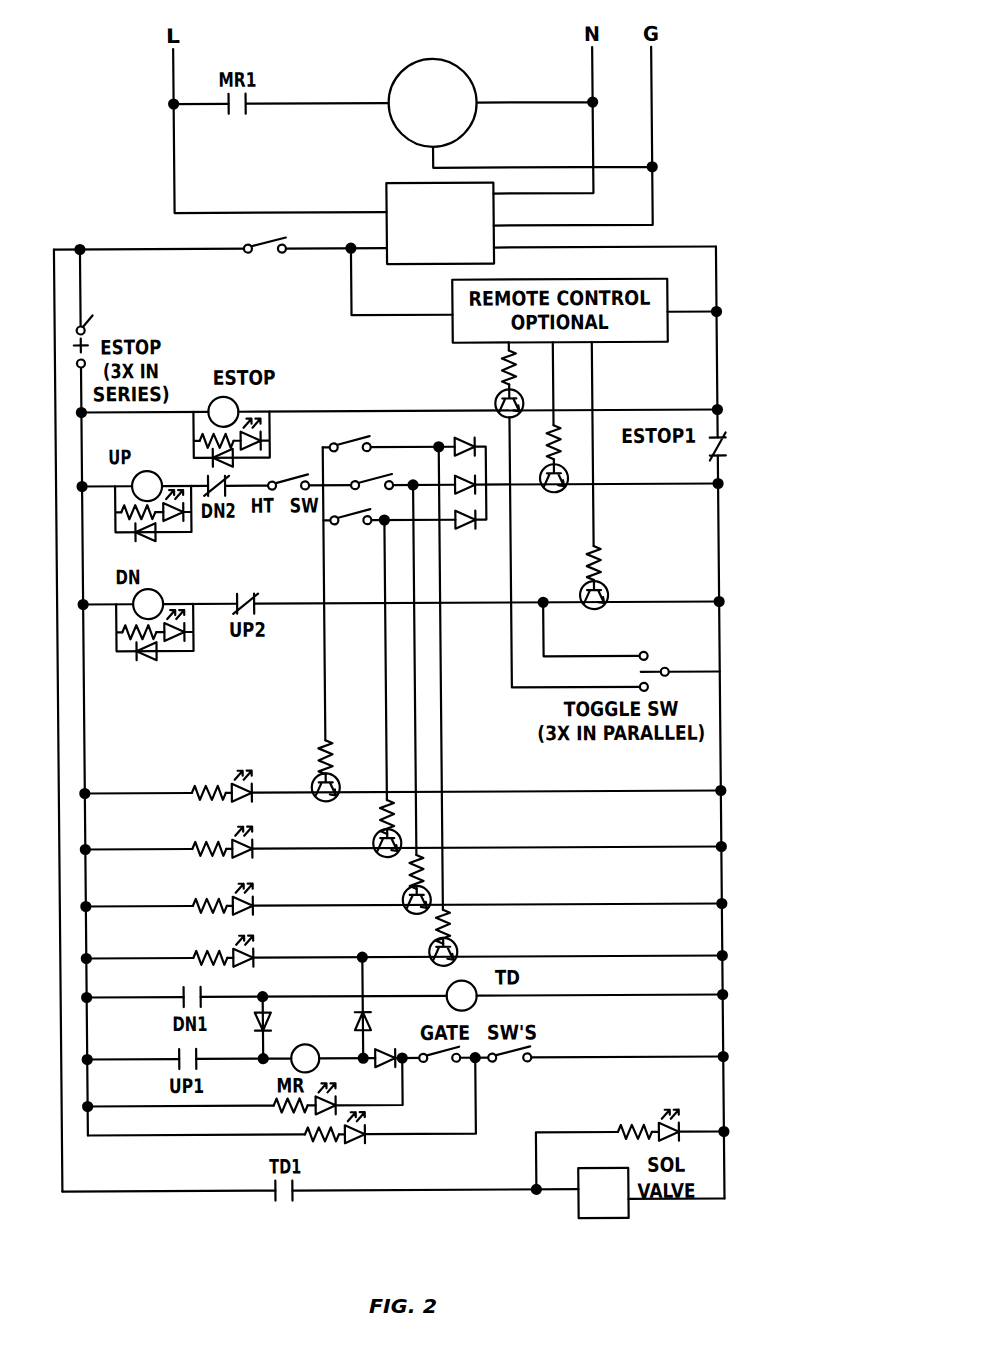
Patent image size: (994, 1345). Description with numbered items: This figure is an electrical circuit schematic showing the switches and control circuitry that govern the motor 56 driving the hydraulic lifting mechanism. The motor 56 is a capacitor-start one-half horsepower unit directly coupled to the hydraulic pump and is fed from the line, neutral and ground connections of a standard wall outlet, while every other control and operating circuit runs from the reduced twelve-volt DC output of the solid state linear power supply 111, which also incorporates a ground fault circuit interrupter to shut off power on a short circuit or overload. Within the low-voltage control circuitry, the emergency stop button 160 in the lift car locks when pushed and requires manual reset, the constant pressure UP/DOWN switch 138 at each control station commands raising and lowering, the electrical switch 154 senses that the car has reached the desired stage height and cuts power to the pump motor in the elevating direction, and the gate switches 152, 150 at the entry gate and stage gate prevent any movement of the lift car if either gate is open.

The motor 56 is at (438, 59).
The power supply 111 is at (396, 183).
The emergency stop button 160 is at (96, 314).
The electrical switch 154 is at (283, 479).
The UP/DOWN switch 138 is at (664, 660).
The electrical switch 152 is at (441, 1064).
The electrical switch 150 is at (509, 1064).